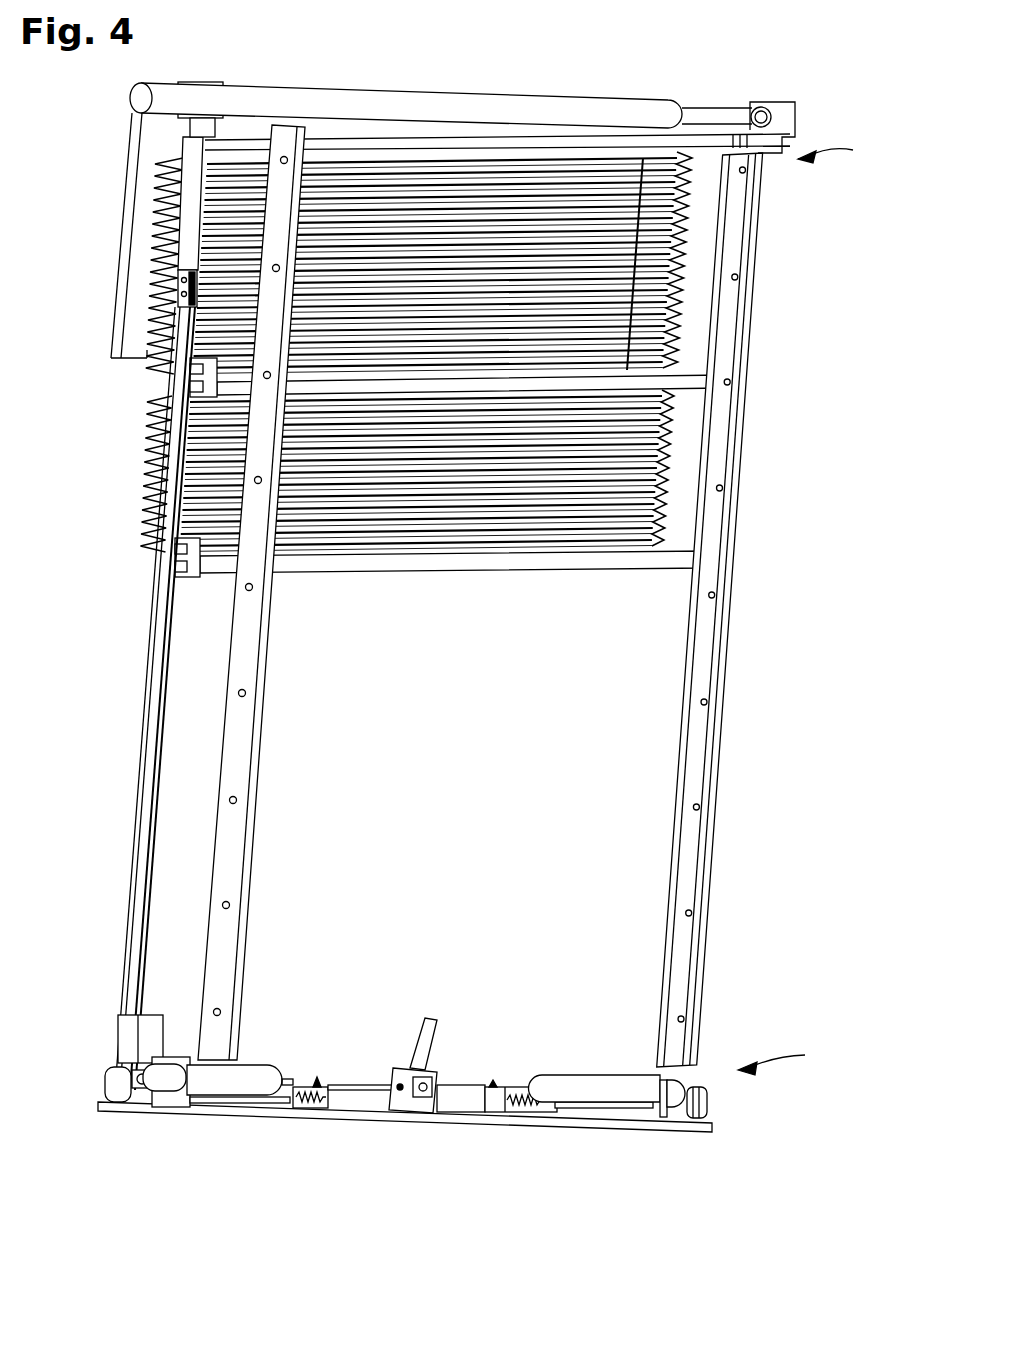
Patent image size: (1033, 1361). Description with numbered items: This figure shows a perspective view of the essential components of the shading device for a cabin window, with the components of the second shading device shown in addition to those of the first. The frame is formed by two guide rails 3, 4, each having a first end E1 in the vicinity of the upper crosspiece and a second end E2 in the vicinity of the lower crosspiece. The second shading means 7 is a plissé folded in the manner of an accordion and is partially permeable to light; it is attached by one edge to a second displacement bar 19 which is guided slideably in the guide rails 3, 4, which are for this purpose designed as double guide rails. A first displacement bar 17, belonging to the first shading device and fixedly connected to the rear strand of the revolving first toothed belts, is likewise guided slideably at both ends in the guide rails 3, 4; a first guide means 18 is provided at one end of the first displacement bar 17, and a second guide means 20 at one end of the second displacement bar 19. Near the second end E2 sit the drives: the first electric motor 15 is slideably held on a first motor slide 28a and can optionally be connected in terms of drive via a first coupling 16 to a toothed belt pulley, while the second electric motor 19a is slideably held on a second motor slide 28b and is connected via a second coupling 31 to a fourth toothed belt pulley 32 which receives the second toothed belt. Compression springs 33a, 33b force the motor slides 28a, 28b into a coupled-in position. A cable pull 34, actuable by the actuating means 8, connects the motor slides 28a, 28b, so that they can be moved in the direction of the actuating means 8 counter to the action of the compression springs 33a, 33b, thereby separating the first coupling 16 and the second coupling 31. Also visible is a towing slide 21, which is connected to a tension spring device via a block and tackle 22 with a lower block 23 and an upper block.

The first end E1 is at (845, 152).
The second end E2 is at (790, 1059).
The guide rail 3 is at (705, 745).
The guide rail 4 is at (245, 880).
The second shading means 7 is at (613, 465).
The actuating means 8 is at (420, 1050).
The first electric motor 15 is at (248, 1086).
The first coupling 16 is at (170, 1087).
The first displacement bar 17 is at (648, 380).
The first guide means 18 is at (200, 376).
The second displacement bar 19 is at (640, 562).
The second electric motor 19a is at (590, 1088).
The second guide means 20 is at (187, 556).
The towing slide 21 is at (148, 1032).
The block and tackle 22 is at (140, 763).
The lower block 23 is at (113, 1087).
The first motor slide 28a is at (215, 1104).
The second motor slide 28b is at (625, 1112).
The second coupling 31 is at (676, 1108).
The fourth toothed belt pulley 32 is at (690, 1100).
The compression spring 33a is at (301, 1108).
The compression spring 33b is at (510, 1110).
The cable pull 34 is at (360, 1080).